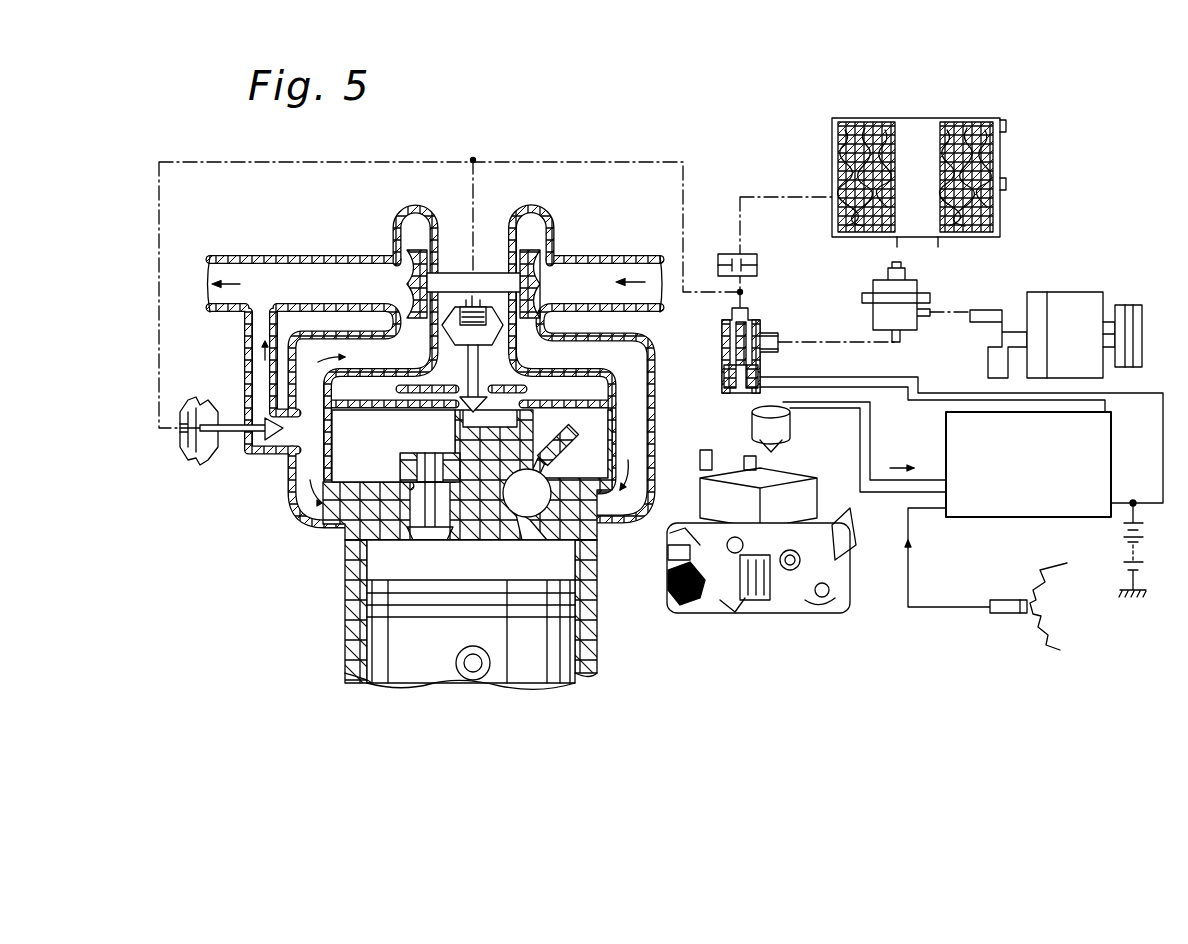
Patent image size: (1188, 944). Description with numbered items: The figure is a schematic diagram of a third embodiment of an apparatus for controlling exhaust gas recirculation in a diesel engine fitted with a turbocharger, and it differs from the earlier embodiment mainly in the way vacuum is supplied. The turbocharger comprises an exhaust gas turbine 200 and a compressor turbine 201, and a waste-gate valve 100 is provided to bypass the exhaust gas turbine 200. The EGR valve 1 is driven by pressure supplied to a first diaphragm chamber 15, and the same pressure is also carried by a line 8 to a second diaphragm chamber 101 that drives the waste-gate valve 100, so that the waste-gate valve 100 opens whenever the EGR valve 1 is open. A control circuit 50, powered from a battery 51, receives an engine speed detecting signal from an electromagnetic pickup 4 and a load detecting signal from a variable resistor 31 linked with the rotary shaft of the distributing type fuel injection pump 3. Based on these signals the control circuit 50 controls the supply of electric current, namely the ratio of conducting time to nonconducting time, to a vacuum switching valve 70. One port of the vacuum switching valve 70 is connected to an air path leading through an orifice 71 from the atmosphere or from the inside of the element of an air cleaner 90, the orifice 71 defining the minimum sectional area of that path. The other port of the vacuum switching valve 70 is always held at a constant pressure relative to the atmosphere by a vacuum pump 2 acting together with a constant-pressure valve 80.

The EGR valve 1 is at (480, 305).
The vacuum pump 2 is at (1065, 294).
The distributing type fuel injection pump 3 is at (718, 470).
The electromagnetic pickup 4 is at (1002, 640).
The pressure signal line 8 is at (685, 230).
The first diaphragm chamber 15 is at (463, 300).
The variable resistor 31 is at (775, 403).
The control circuit 50 is at (1111, 446).
The battery 51 is at (1146, 533).
The vacuum switching valve 70 is at (760, 326).
The orifice 71 is at (757, 262).
The constant-pressure valve 80 is at (917, 296).
The air cleaner 90 is at (1000, 158).
The waste-gate valve 100 is at (186, 456).
The second diaphragm chamber 101 is at (200, 456).
The exhaust gas turbine 200 is at (397, 268).
The compressor turbine 201 is at (548, 263).